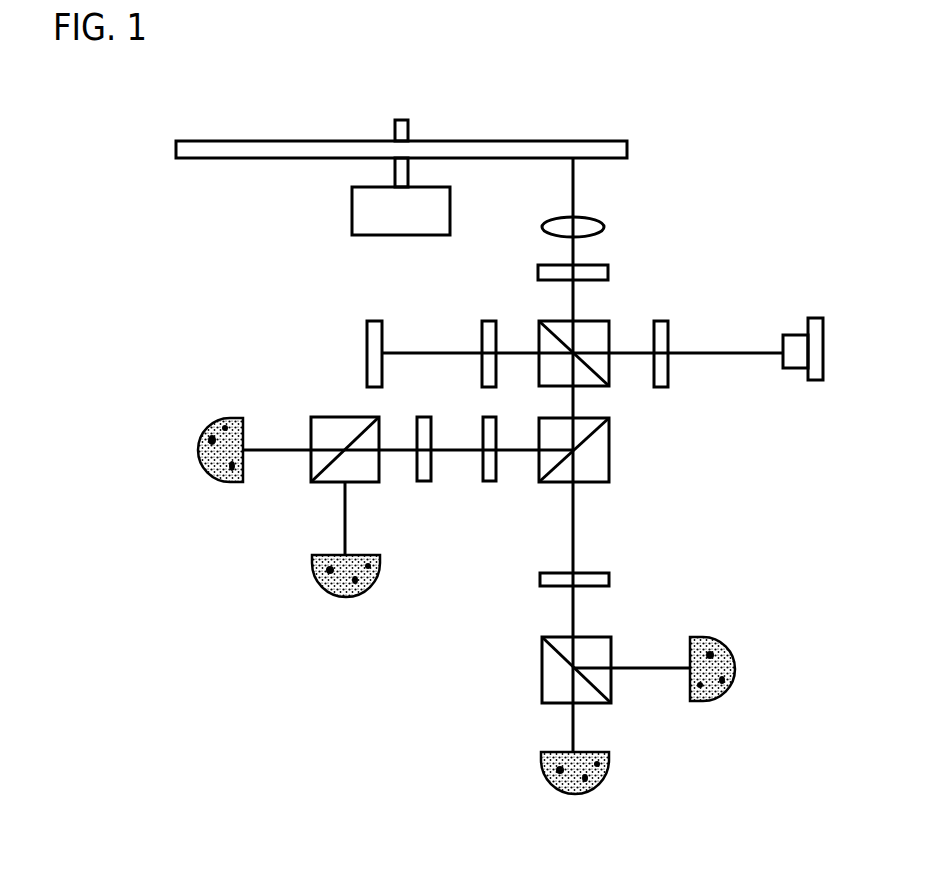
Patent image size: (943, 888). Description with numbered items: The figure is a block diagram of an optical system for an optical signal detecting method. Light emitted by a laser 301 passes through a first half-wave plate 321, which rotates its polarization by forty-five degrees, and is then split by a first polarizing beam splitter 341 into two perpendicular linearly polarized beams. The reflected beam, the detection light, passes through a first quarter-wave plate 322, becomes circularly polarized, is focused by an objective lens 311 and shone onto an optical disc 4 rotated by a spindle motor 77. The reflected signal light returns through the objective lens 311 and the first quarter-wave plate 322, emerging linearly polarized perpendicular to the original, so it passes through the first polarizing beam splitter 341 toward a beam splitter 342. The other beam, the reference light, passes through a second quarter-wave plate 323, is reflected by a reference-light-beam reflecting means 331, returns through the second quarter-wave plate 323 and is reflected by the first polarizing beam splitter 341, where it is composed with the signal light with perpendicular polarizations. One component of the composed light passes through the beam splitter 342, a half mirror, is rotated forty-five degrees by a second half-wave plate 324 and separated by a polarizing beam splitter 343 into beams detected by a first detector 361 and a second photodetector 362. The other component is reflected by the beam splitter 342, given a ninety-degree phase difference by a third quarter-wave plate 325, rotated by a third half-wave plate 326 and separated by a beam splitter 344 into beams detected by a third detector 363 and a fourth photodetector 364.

The optical disc 4 is at (600, 148).
The spindle motor 77 is at (352, 212).
The objective lens 311 is at (600, 226).
The first λ/4 plate 322 is at (610, 268).
The first polarizing beam splitter 341 is at (539, 330).
The first λ/2 plate 321 is at (672, 342).
The laser 301 is at (795, 335).
The second λ/4 plate 323 is at (482, 325).
The reference-light-beam reflecting means 331 is at (367, 372).
The third detector 363 is at (207, 430).
The beam splitter 344 is at (311, 472).
The third λ/2 plate 326 is at (432, 485).
The third λ/4 plate 325 is at (495, 485).
The beam splitter 342 is at (612, 460).
The fourth photodetector 364 is at (325, 598).
The second λ/2 plate 324 is at (612, 580).
The polarizing beam splitter 343 is at (540, 672).
The second photodetector 362 is at (733, 688).
The first detector 361 is at (612, 755).